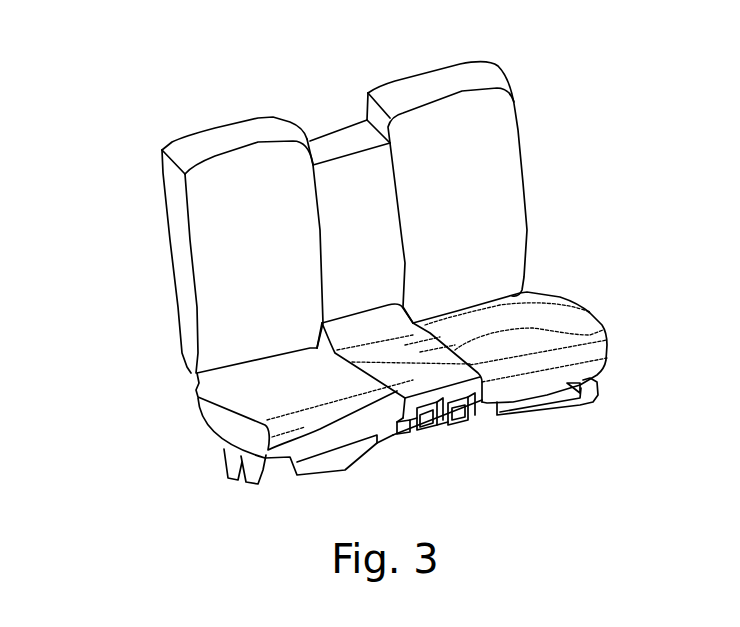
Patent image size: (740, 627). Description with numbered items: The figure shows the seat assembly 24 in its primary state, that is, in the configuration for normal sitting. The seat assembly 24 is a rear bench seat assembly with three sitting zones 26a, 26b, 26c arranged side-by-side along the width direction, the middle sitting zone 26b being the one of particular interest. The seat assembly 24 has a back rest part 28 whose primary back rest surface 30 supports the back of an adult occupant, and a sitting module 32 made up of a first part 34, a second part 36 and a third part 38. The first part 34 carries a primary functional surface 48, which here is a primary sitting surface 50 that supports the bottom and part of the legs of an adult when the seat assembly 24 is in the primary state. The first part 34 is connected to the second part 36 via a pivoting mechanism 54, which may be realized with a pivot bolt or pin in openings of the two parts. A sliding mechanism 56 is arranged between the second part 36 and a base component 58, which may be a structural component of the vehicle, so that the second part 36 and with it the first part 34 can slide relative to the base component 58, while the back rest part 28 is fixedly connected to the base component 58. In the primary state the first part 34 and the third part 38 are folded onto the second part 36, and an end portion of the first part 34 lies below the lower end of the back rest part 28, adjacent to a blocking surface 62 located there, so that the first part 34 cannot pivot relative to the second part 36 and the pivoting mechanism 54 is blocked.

The seat assembly 24 is at (370, 266).
The sitting zone 26a is at (496, 235).
The sitting zone 26b is at (363, 188).
The sitting zone 26c is at (265, 380).
The back rest part 28 is at (321, 138).
The primary back rest surface 30 is at (333, 178).
The sitting module 32 is at (437, 445).
The first part 34 is at (578, 322).
The second part 36 is at (457, 423).
The third part 38 is at (437, 428).
The primary functional surface 48 is at (418, 367).
The primary sitting surface 50 is at (593, 283).
The pivoting mechanism 54 is at (486, 409).
The sliding mechanism 56 is at (457, 435).
The base component 58 is at (390, 440).
The blocking surface 62 is at (376, 307).